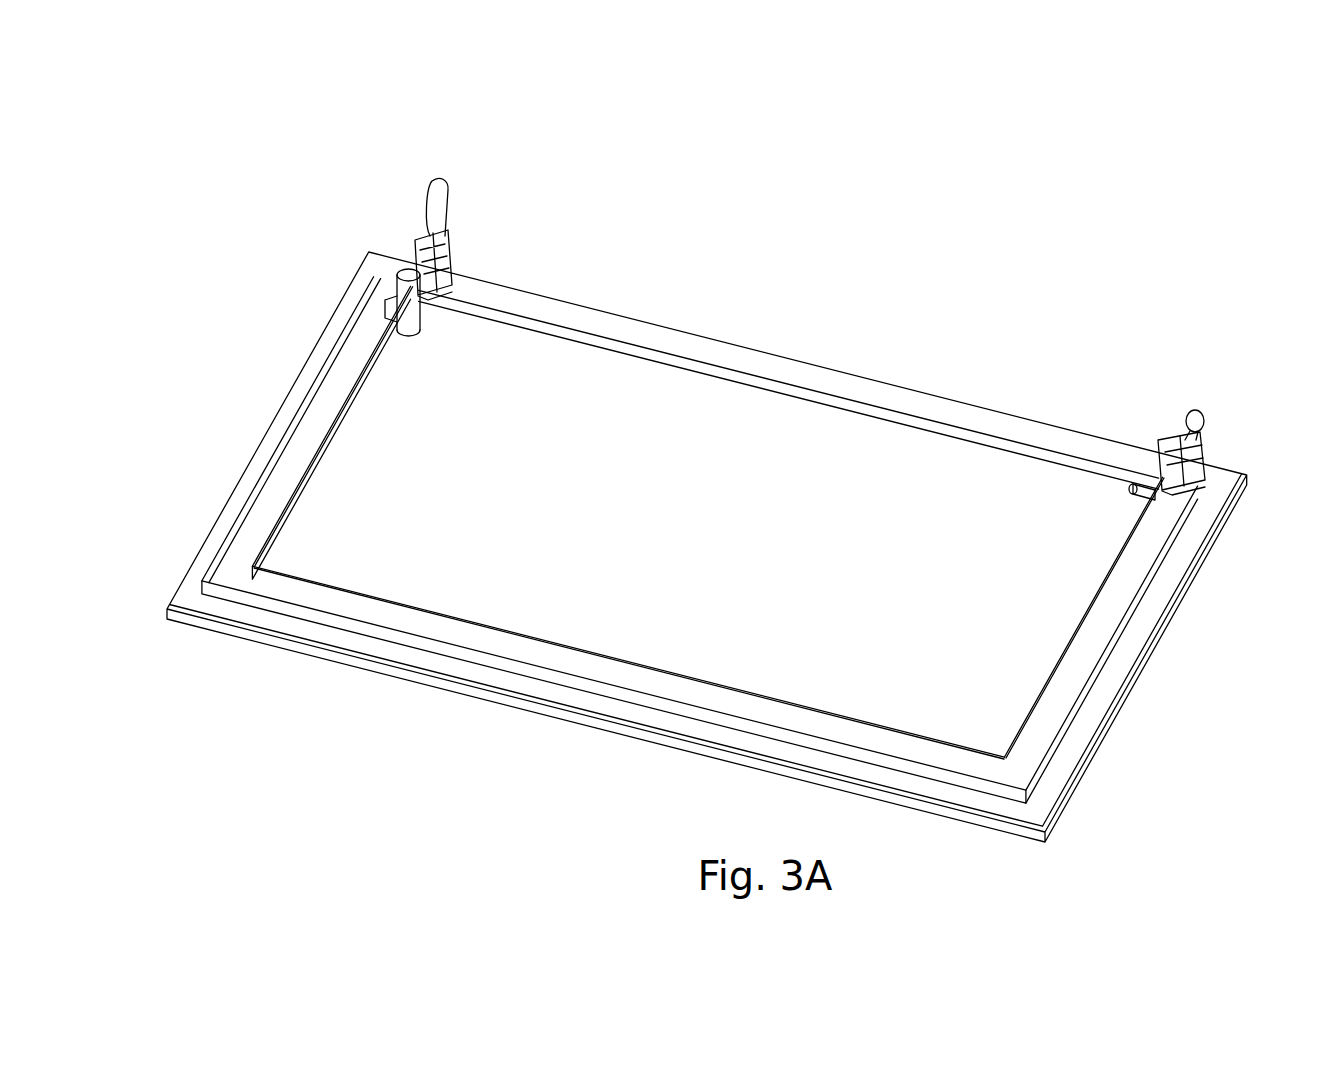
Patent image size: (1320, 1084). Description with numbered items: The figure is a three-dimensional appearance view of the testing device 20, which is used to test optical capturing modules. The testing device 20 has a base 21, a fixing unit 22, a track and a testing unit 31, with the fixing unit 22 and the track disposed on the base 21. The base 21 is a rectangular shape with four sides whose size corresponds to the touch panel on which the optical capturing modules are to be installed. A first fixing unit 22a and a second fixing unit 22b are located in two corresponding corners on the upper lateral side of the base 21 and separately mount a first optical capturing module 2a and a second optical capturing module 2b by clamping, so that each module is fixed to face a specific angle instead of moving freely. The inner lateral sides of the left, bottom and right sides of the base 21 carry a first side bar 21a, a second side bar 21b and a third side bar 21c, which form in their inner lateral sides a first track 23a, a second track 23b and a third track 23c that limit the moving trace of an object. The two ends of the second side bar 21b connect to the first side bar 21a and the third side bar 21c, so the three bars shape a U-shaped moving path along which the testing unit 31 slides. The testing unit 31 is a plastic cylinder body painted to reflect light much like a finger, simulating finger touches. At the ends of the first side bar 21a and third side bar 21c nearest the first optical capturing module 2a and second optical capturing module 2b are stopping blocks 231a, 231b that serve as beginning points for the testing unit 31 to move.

The testing device 20 is at (1037, 185).
The base 21 is at (712, 540).
The first side bar 21a is at (285, 429).
The second side bar 21b is at (540, 664).
The third side bar 21c is at (1102, 618).
The fixing unit 22 is at (953, 290).
The first fixing unit 22a is at (1094, 400).
The second fixing unit 22b is at (557, 239).
The first optical capturing module 2a is at (1187, 480).
The second optical capturing module 2b is at (422, 292).
The first track 23a is at (299, 466).
The second track 23b is at (675, 667).
The third track 23c is at (1055, 645).
The stopping block 231a is at (420, 302).
The stopping block 231b is at (1139, 480).
The testing unit 31 is at (385, 304).